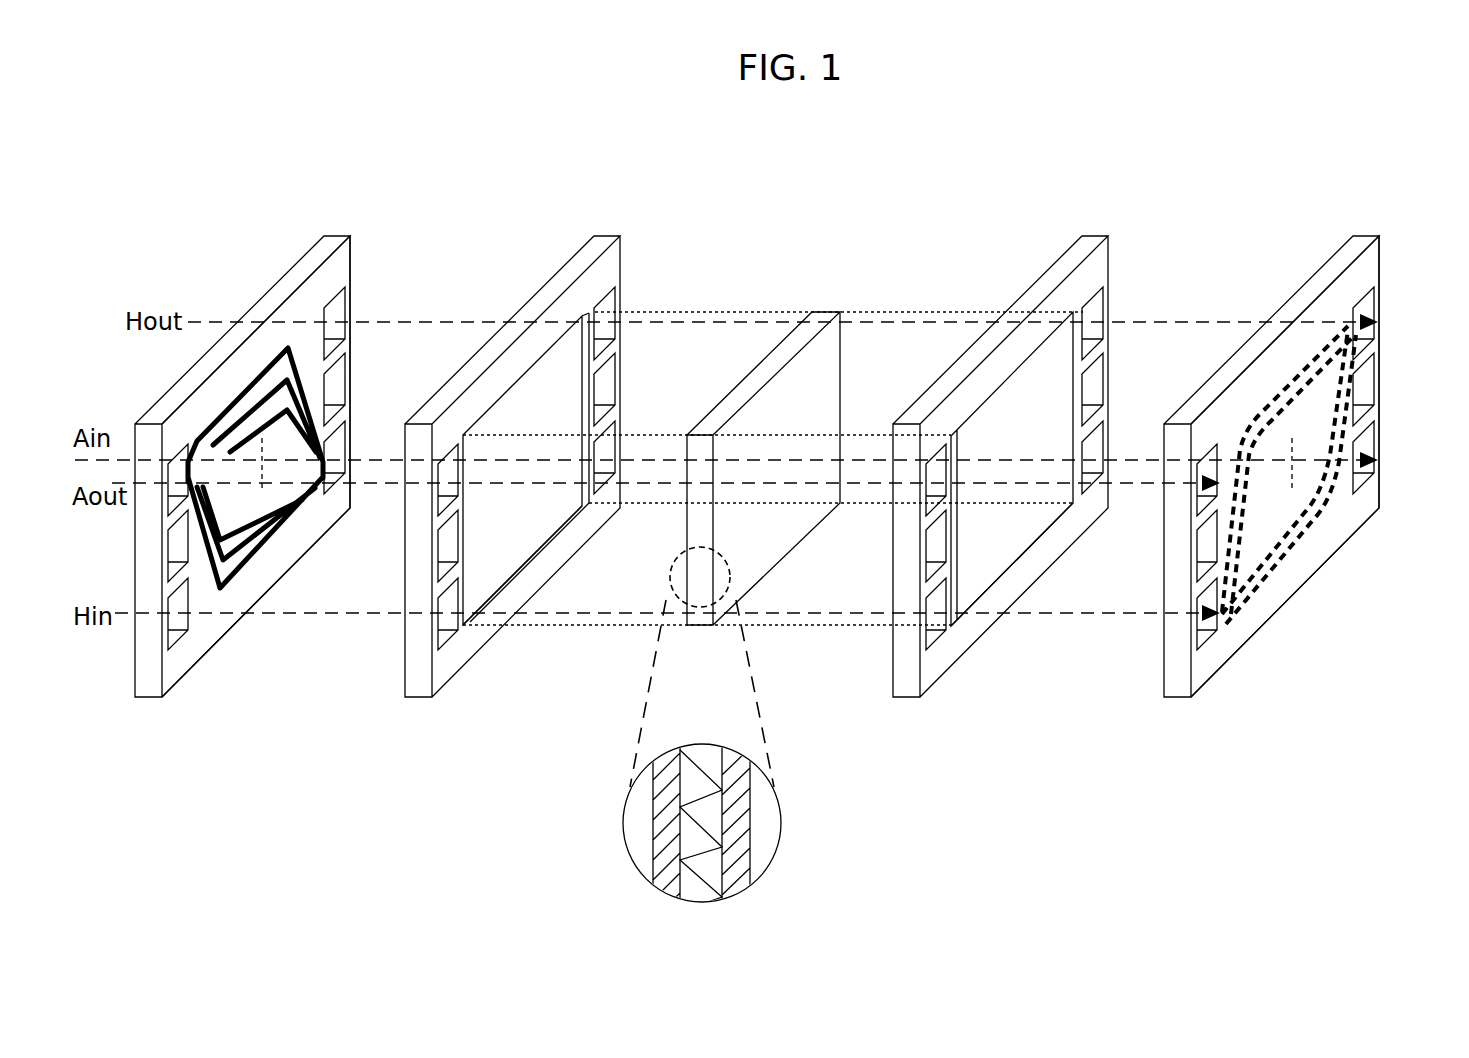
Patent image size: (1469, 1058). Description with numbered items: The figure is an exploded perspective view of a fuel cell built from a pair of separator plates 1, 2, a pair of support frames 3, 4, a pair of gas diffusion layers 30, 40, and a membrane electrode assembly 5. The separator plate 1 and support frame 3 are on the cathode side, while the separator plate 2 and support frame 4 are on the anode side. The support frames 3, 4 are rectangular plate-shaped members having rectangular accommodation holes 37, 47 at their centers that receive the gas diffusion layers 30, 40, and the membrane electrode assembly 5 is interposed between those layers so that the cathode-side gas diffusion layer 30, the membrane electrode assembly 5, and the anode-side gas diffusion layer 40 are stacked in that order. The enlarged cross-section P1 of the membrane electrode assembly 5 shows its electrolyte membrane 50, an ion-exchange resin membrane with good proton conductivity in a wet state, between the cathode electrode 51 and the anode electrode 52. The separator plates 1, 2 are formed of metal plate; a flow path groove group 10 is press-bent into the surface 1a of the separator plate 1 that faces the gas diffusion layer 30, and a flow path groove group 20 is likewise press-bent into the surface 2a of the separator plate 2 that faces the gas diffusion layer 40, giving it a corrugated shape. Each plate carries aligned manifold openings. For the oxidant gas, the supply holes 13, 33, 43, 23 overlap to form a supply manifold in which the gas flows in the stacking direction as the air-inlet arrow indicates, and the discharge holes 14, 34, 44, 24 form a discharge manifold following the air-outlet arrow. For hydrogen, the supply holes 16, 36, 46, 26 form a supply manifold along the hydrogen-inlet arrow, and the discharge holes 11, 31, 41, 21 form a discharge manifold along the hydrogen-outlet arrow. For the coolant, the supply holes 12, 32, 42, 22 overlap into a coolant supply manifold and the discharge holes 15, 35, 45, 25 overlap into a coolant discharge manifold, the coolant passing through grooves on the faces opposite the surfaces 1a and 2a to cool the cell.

The separator plate 1 is at (340, 236).
The surface 1a is at (351, 265).
The flow path groove group 10 is at (284, 539).
The discharge hole 11 is at (350, 310).
The supply hole 12 is at (350, 380).
The supply hole 13 is at (350, 432).
The discharge hole 14 is at (168, 494).
The discharge hole 15 is at (168, 548).
The supply hole 16 is at (168, 630).
The separator plate 2 is at (1368, 236).
The surface 2a is at (1330, 258).
The flow path groove group 20 is at (1300, 549).
The discharge hole 21 is at (1380, 305).
The supply hole 22 is at (1380, 380).
The supply hole 23 is at (1380, 442).
The discharge hole 24 is at (1197, 496).
The discharge hole 25 is at (1197, 560).
The supply hole 26 is at (1197, 630).
The support frame 3 is at (608, 236).
The gas diffusion layer 30 is at (516, 517).
The discharge hole 31 is at (620, 310).
The supply hole 32 is at (620, 378).
The supply hole 33 is at (620, 445).
The discharge hole 34 is at (440, 498).
The discharge hole 35 is at (440, 565).
The supply hole 36 is at (440, 627).
The accommodation hole 37 is at (547, 541).
The support frame 4 is at (1098, 236).
The gas diffusion layer 40 is at (1000, 542).
The discharge hole 41 is at (1108, 310).
The supply hole 42 is at (1108, 378).
The supply hole 43 is at (1108, 445).
The discharge hole 44 is at (928, 496).
The discharge hole 45 is at (928, 565).
The supply hole 46 is at (928, 627).
The accommodation hole 47 is at (1037, 539).
The membrane electrode assembly 5 is at (820, 312).
The electrolyte membrane 50 is at (697, 747).
The cathode electrode 51 is at (668, 753).
The anode electrode 52 is at (737, 753).
The cross-section of the MEA P1 is at (778, 803).